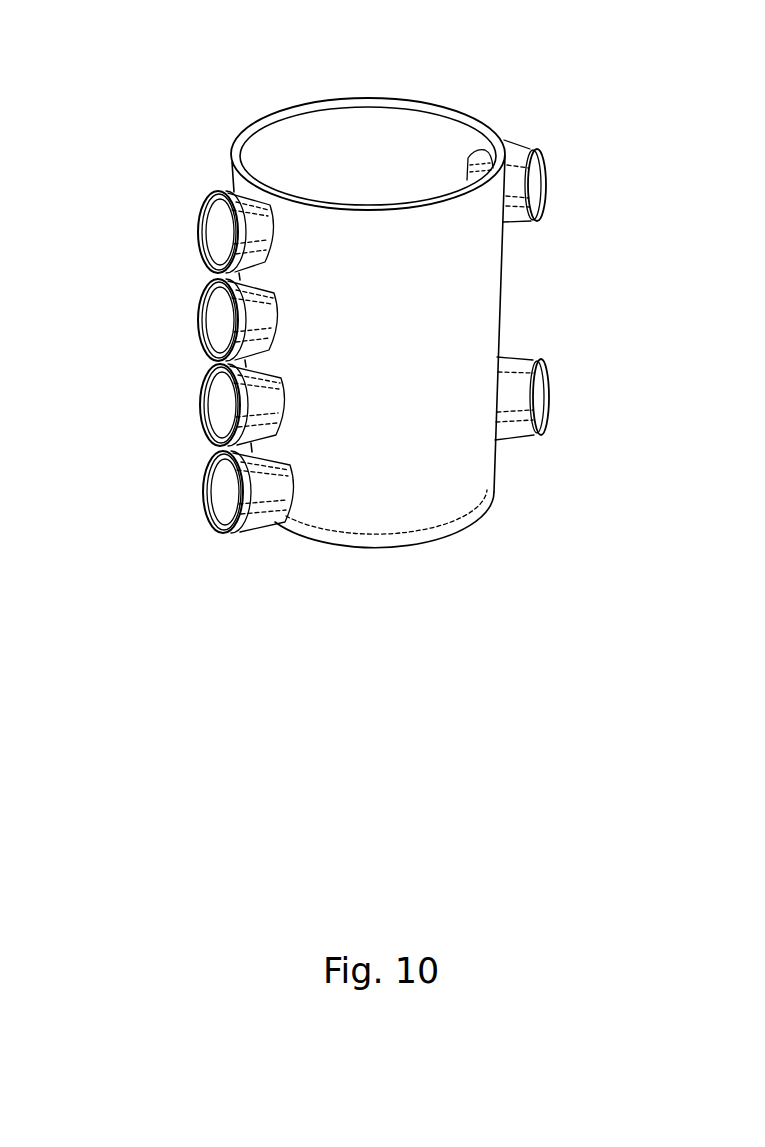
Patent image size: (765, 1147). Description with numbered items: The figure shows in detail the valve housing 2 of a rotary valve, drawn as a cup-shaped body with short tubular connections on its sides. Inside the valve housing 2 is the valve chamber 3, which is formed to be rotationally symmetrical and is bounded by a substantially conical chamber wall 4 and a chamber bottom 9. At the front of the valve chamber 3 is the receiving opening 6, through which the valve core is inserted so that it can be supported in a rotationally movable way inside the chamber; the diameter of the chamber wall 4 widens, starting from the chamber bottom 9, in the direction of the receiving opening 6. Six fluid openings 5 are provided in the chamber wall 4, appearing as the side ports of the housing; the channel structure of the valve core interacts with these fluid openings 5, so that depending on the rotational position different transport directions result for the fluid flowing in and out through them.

The valve housing 2 is at (452, 303).
The valve chamber 3 is at (300, 147).
The chamber wall 4 is at (405, 158).
The fluid openings 5 is at (215, 232).
The receiving opening 6 is at (365, 131).
The chamber bottom 9 is at (394, 553).